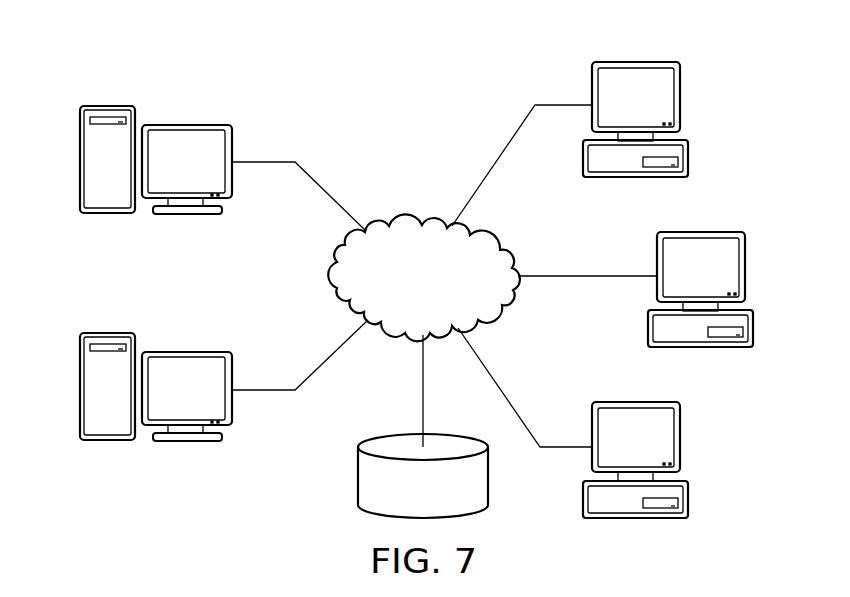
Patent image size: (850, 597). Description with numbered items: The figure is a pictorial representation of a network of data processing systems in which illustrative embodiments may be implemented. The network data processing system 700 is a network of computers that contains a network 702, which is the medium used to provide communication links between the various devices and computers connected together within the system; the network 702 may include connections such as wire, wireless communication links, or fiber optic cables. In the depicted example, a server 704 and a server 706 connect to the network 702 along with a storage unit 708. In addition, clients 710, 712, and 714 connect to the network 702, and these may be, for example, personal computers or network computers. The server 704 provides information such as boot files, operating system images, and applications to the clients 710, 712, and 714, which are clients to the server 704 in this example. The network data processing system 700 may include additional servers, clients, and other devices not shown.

The network data processing system 700 is at (304, 80).
The network 702 is at (416, 220).
The server 704 is at (80, 160).
The server 706 is at (80, 388).
The storage unit 708 is at (358, 480).
The client 710 is at (688, 158).
The client 712 is at (753, 328).
The client 714 is at (688, 500).